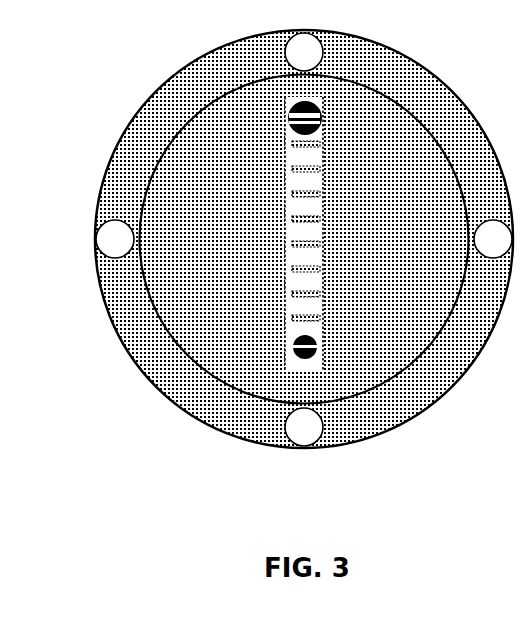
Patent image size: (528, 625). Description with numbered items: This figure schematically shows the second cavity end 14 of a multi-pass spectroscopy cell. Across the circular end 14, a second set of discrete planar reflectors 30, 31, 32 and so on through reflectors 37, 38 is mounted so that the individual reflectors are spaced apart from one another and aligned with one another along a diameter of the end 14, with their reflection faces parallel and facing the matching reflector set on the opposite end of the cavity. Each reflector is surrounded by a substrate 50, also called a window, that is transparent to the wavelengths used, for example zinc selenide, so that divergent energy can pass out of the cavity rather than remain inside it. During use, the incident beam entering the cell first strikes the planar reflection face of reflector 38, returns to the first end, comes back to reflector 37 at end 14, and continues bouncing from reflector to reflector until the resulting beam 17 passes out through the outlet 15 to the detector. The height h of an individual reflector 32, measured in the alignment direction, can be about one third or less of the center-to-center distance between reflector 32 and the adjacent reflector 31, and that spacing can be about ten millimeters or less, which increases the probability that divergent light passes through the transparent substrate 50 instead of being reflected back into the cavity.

The second end of the cell cavity 14 is at (191, 99).
The outlet 15 is at (322, 121).
The resulting beam 17 is at (288, 112).
The reflector 30 is at (295, 146).
The reflector 31 is at (297, 172).
The reflector 32 is at (297, 197).
The reflector 37 is at (295, 320).
The reflector 38 is at (292, 345).
The substrate 50 is at (297, 260).
The height of reflector h is at (312, 192).